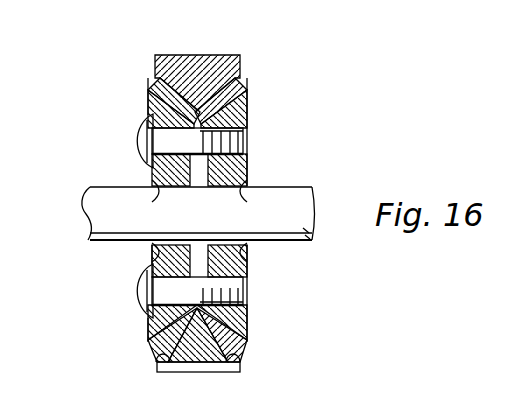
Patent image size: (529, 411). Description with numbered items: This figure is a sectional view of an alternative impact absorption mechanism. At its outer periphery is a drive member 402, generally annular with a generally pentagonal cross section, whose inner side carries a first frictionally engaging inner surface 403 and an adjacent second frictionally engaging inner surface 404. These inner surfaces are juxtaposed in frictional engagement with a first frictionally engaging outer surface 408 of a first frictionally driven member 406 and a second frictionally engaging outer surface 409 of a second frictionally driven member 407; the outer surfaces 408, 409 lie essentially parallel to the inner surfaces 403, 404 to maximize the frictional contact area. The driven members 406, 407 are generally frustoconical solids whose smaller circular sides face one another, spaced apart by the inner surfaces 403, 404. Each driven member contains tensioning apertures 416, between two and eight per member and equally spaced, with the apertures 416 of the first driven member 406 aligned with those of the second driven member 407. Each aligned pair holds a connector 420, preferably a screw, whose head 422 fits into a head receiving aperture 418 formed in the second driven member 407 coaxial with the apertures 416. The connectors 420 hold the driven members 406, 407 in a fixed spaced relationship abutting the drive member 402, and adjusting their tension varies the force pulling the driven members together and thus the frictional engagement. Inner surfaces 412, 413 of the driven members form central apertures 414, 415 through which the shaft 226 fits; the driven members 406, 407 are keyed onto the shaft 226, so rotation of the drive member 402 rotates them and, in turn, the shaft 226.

The drive member 402 is at (203, 54).
The first frictionally engaging inner surface 403 is at (247, 88).
The second frictionally engaging inner surface 404 is at (150, 92).
The first frictionally driven member 406 is at (247, 328).
The second frictionally driven member 407 is at (147, 333).
The first frictionally engaging outer surface 408 is at (222, 370).
The second frictionally engaging outer surface 409 is at (158, 370).
The inner surface 412 is at (244, 200).
The inner surface 413 is at (148, 200).
The central aperture 414 is at (247, 256).
The central aperture 415 is at (149, 257).
The tensioning aperture 416 is at (246, 285).
The head receiving aperture 418 is at (142, 302).
The connector 420 is at (246, 132).
The head 422 is at (142, 132).
The shaft 226 is at (104, 211).